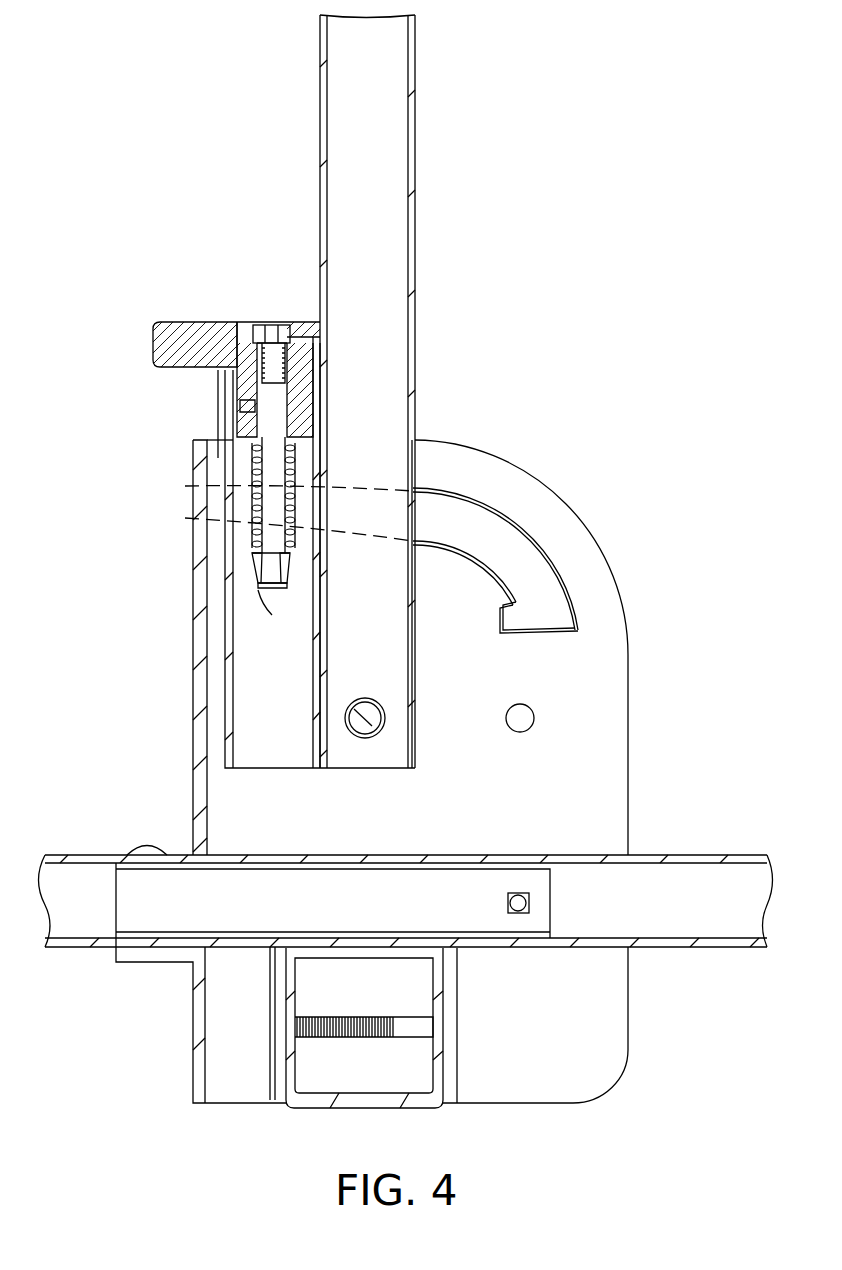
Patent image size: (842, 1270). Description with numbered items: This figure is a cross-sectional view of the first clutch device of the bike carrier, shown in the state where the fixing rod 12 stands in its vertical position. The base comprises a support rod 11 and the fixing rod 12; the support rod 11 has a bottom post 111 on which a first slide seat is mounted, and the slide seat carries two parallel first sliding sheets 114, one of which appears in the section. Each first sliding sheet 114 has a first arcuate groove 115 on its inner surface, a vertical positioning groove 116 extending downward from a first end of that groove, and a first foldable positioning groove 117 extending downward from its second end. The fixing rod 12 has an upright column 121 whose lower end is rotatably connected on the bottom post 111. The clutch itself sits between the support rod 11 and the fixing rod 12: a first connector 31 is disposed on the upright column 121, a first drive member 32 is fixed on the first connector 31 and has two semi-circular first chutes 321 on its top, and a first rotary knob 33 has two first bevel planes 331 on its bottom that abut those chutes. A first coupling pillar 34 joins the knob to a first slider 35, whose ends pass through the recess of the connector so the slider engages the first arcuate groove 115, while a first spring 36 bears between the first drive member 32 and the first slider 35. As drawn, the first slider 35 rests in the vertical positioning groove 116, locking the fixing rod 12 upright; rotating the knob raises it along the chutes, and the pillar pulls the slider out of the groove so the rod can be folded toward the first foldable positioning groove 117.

The support rod 11 is at (712, 1062).
The bottom post 111 is at (703, 947).
The first sliding sheet 114 is at (590, 777).
The first arcuate groove 115 is at (498, 528).
The vertical positioning groove 116 is at (272, 592).
The first foldable positioning groove 117 is at (487, 632).
The fixing rod 12 is at (513, 93).
The upright column 121 is at (420, 120).
The first connector 31 is at (228, 717).
The first drive member 32 is at (228, 430).
The first chute 321 is at (240, 408).
The first rotary knob 33 is at (192, 330).
The first bevel plane 331 is at (252, 380).
The first coupling pillar 34 is at (272, 487).
The first slider 35 is at (283, 553).
The first spring 36 is at (258, 512).